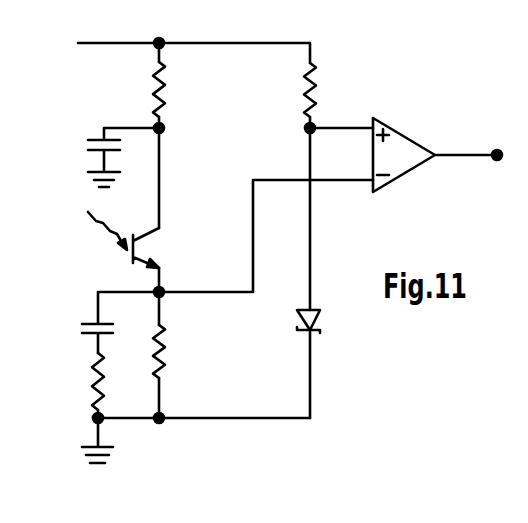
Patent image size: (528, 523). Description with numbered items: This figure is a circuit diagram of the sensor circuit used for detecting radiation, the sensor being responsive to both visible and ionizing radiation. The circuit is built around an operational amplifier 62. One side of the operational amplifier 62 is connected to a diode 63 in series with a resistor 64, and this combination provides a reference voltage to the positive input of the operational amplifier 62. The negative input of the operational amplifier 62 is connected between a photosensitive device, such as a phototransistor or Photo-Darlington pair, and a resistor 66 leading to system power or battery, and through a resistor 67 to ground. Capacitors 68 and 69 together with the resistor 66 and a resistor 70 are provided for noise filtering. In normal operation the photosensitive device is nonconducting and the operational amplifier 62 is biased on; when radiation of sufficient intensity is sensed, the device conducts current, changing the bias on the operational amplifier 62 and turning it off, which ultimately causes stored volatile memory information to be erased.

The operational amplifier 62 is at (400, 148).
The diode 63 is at (318, 317).
The resistor 64 is at (318, 98).
The resistor 66 is at (163, 92).
The resistor 67 is at (161, 358).
The capacitor 68 is at (87, 142).
The capacitor 69 is at (82, 328).
The resistor 70 is at (92, 387).